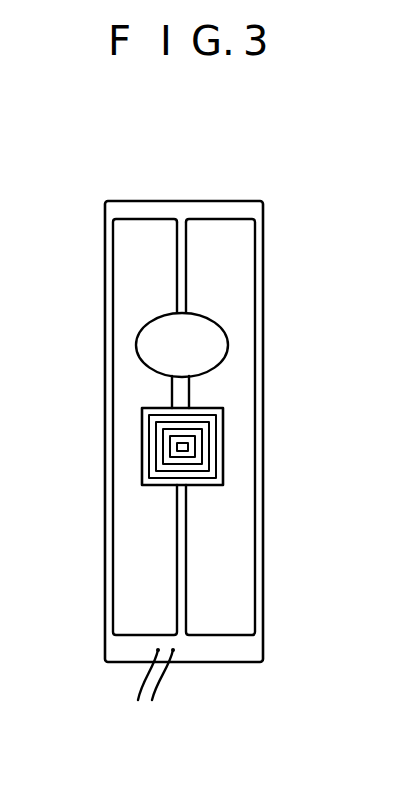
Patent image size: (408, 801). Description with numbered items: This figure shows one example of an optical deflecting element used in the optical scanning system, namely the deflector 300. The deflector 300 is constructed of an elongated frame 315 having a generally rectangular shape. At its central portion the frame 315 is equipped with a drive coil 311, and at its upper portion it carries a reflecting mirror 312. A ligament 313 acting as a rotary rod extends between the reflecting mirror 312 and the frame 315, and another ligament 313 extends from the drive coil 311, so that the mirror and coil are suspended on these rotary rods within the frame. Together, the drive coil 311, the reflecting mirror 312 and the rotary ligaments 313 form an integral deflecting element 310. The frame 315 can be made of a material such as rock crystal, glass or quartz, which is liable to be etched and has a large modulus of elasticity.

The deflector 300 is at (232, 170).
The deflecting element 310 is at (168, 201).
The drive coil 311 is at (223, 450).
The reflecting mirror 312 is at (223, 350).
The ligament 313 is at (187, 265).
The frame 315 is at (105, 281).